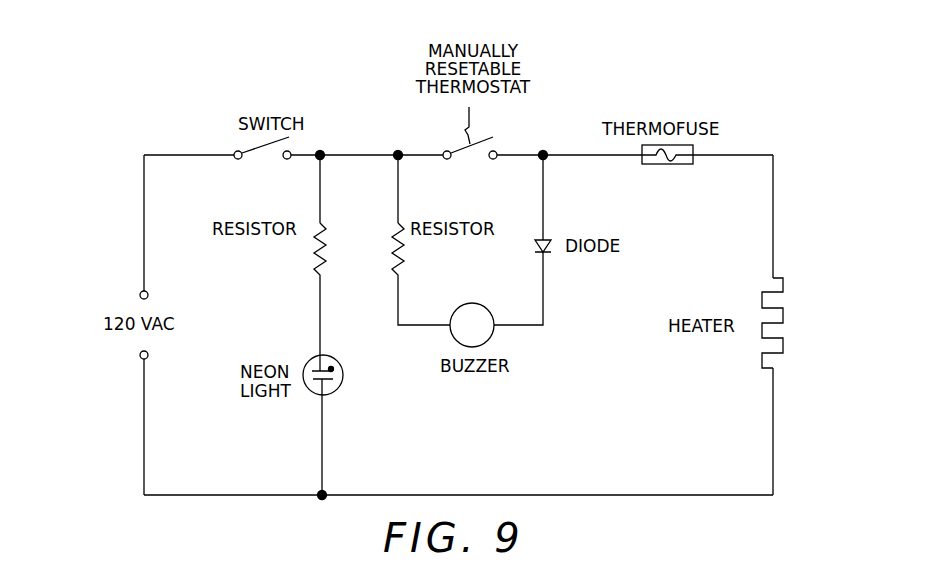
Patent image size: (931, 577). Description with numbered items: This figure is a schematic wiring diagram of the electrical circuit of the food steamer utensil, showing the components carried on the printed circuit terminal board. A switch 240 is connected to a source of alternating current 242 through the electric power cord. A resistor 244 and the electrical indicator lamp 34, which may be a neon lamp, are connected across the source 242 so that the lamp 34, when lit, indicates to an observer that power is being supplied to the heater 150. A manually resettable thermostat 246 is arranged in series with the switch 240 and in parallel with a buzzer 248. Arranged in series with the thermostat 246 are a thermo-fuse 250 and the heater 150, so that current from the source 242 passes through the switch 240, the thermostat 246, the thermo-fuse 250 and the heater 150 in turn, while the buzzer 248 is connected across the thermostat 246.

The switch 240 is at (252, 152).
The source of alternating current 242 is at (143, 341).
The resistor 244 is at (328, 265).
The manually resettable thermostat 246 is at (498, 147).
The buzzer 248 is at (493, 338).
The thermo-fuse 250 is at (665, 165).
The heater 150 is at (783, 350).
The electrical indicator lamp 34 is at (341, 386).